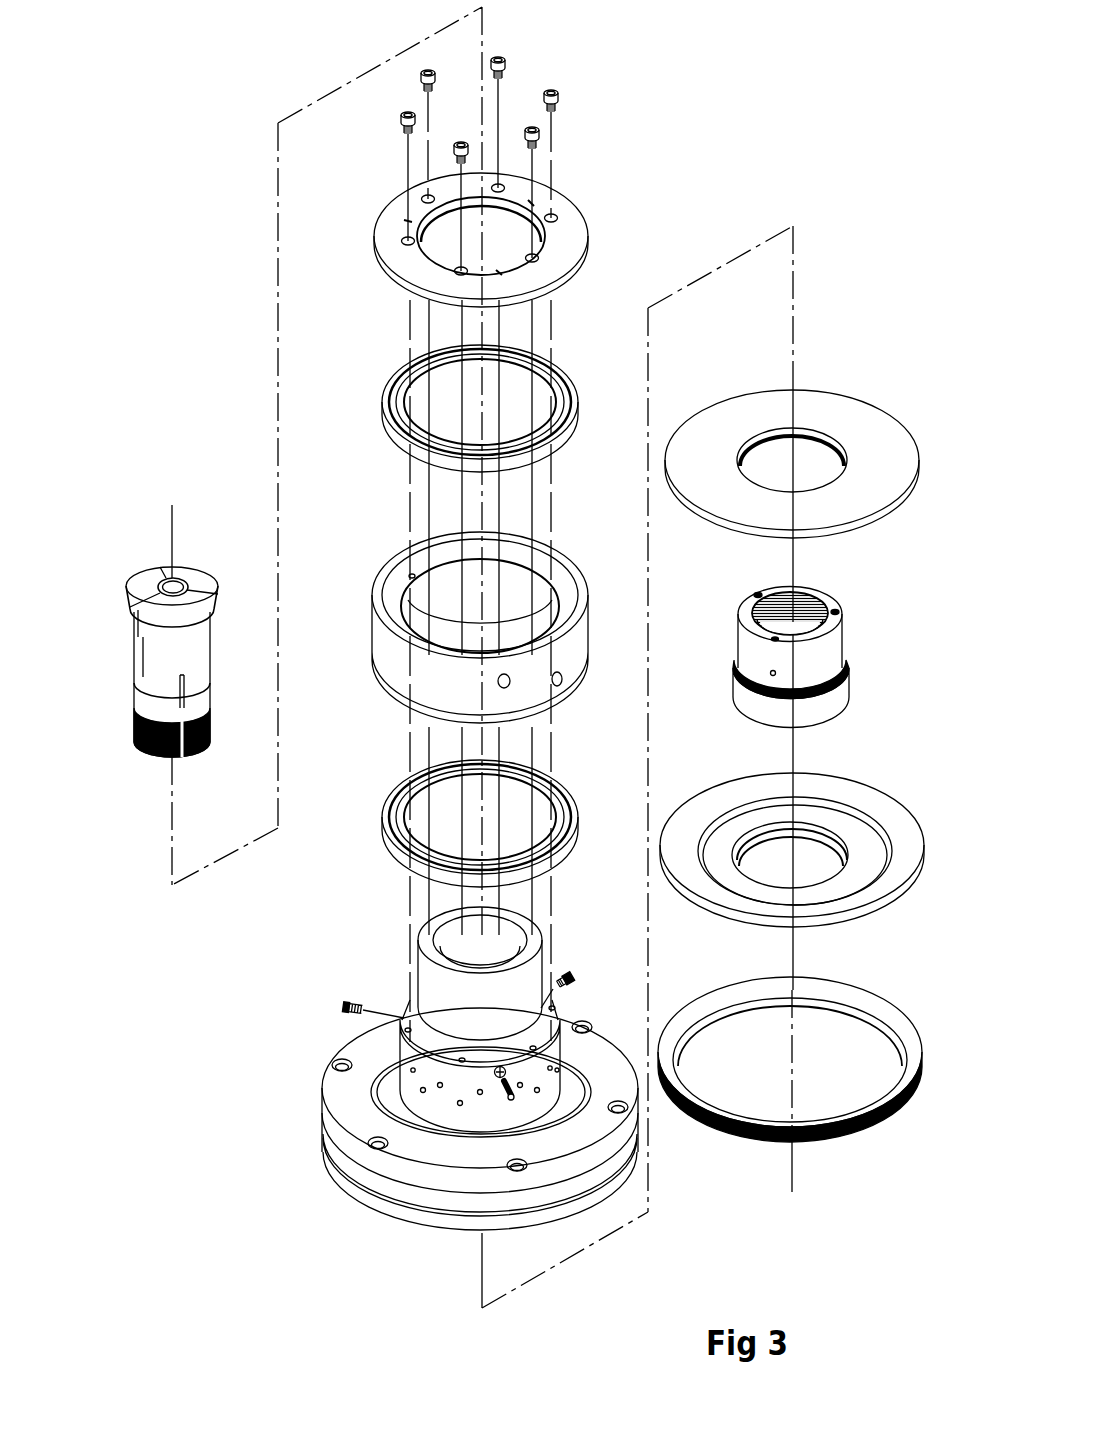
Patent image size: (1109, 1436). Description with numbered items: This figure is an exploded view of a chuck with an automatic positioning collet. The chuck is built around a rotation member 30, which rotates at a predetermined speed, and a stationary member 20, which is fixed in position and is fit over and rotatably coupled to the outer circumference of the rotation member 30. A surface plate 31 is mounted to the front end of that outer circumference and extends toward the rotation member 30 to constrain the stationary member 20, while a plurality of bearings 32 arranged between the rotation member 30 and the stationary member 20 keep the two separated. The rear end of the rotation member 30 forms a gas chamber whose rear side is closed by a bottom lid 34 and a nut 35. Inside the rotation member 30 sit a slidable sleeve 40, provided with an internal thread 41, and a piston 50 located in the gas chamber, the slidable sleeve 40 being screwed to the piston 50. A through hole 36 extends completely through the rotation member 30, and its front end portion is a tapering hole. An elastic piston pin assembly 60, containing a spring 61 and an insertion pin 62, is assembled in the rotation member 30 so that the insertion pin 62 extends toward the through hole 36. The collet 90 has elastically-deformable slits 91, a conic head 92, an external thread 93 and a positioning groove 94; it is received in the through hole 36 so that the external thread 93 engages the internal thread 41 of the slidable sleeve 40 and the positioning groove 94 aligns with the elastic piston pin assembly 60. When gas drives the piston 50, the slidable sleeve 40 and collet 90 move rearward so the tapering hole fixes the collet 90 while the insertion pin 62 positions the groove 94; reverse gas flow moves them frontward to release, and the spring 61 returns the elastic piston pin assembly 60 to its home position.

The stationary member 20 is at (383, 637).
The rotation member 30 is at (431, 1091).
The surface plate 31 is at (565, 243).
The bearings 32 is at (395, 410).
The bottom lid 34 is at (870, 823).
The nut 35 is at (890, 1013).
The through hole 36 is at (452, 940).
The slidable sleeve 40 is at (812, 648).
The internal thread 41 is at (753, 598).
The piston 50 is at (825, 410).
The elastic piston pin assembly 60 is at (295, 1045).
The spring 61 is at (348, 1012).
The insertion pin 62 is at (350, 1003).
The collet 90 is at (142, 620).
The elastically-deformable slits 91 is at (168, 580).
The conic head 92 is at (163, 629).
The external thread 93 is at (206, 745).
The positioning groove 94 is at (182, 703).